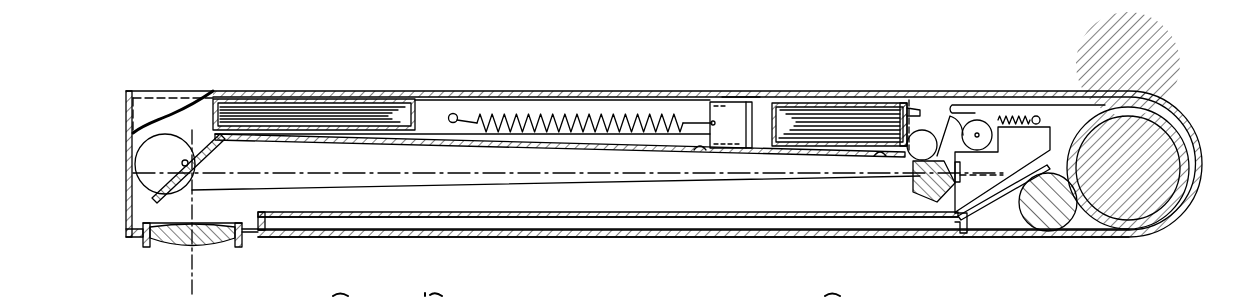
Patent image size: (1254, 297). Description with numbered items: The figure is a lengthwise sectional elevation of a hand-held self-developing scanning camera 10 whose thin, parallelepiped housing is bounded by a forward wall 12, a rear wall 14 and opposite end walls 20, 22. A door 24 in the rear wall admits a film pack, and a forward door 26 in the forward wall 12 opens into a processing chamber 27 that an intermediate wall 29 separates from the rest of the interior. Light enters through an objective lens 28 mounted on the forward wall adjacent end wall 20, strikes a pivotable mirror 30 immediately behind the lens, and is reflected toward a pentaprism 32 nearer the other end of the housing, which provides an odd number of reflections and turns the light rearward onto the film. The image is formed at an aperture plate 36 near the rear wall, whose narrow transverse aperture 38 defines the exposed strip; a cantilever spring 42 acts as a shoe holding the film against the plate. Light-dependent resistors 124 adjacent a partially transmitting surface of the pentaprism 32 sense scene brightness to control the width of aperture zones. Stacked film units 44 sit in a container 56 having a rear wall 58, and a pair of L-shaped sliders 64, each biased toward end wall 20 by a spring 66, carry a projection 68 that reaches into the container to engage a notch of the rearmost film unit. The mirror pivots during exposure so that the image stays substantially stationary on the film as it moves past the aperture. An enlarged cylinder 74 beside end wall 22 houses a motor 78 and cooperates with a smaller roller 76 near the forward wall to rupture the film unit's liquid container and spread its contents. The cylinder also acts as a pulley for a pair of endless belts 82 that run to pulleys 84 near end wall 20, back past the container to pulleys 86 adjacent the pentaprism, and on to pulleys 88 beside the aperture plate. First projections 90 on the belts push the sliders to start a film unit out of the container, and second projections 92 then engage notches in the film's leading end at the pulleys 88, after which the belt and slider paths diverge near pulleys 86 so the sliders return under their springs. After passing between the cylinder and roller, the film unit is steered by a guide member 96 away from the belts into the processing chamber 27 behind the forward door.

The camera 10 is at (376, 80).
The forward wall 12 is at (240, 240).
The rear wall 14 is at (214, 92).
The end wall 20 is at (126, 113).
The end wall 22 is at (1203, 157).
The door 24 is at (490, 91).
The forward door 26 is at (520, 236).
The processing chamber 27 is at (408, 230).
The objective lens 28 is at (176, 248).
The intermediate wall 29 is at (672, 218).
The mirror 30 is at (216, 144).
The pentaprism 32 is at (924, 190).
The aperture plate 36 is at (896, 102).
The aperture 38 is at (928, 112).
The cantilever spring 42 is at (968, 118).
The film units 44 is at (830, 98).
The container 56 is at (562, 152).
The rear wall 58 is at (632, 92).
The sliders 64 is at (712, 106).
The spring 66 is at (562, 118).
The projection 68 is at (740, 91).
The cylinder 74 is at (1160, 106).
The roller 76 is at (1070, 228).
The motor 78 is at (1118, 149).
The endless belts 82 is at (246, 188).
The pulleys 84 is at (142, 167).
The pulleys 86 is at (912, 160).
The pulleys 88 is at (986, 118).
The first projections 90 is at (698, 150).
The second projections 92 is at (878, 158).
The guide member 96 is at (994, 200).
The light-dependent resistors 124 is at (962, 176).